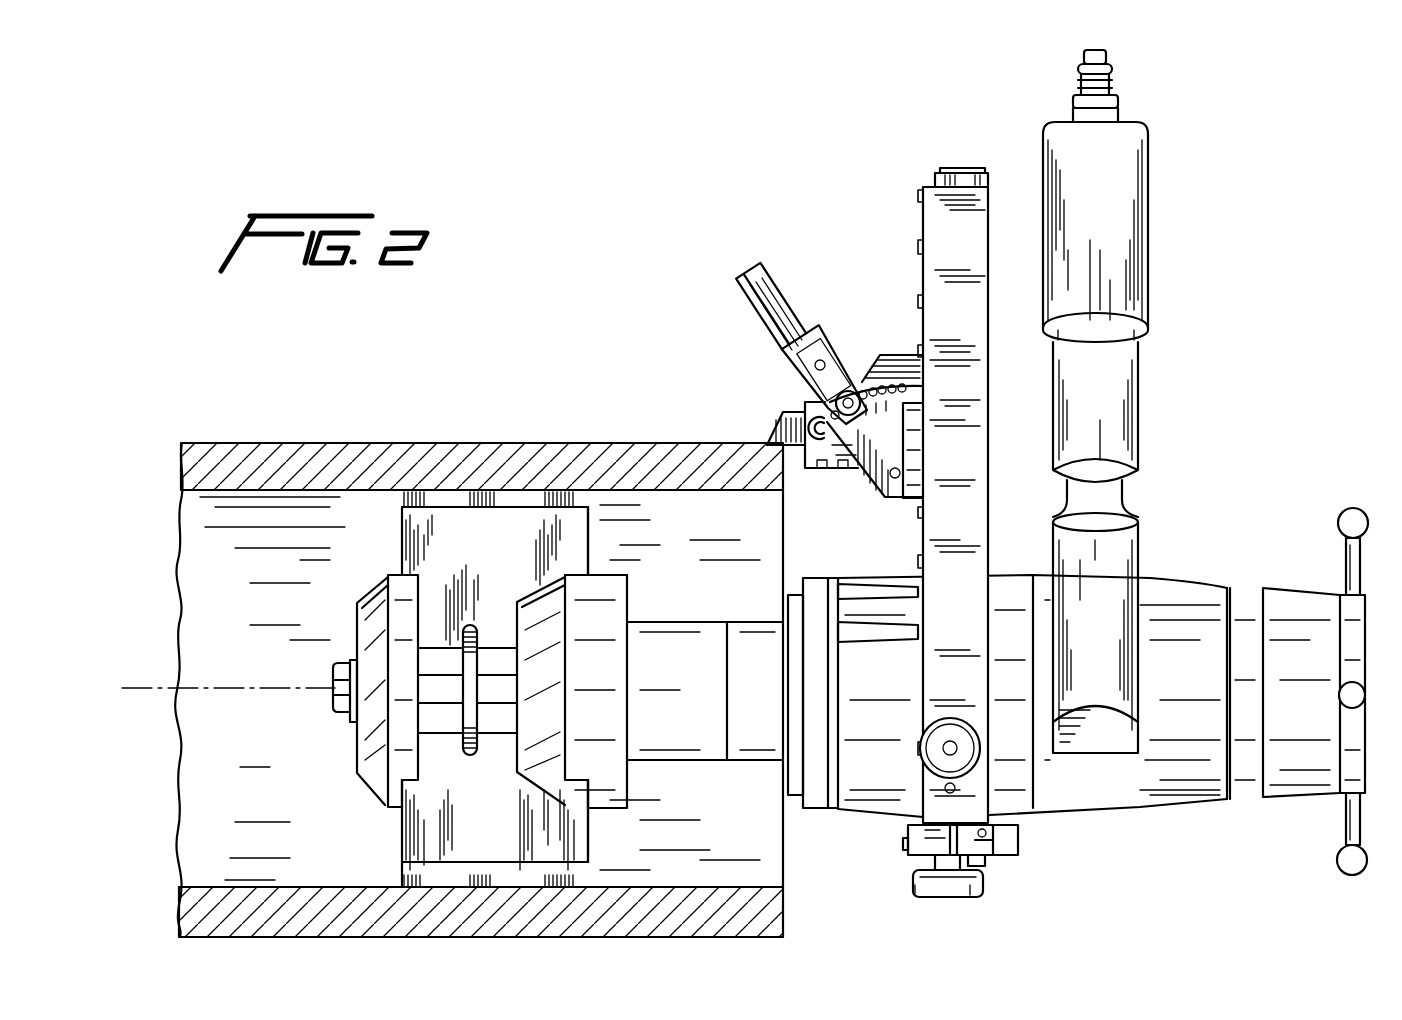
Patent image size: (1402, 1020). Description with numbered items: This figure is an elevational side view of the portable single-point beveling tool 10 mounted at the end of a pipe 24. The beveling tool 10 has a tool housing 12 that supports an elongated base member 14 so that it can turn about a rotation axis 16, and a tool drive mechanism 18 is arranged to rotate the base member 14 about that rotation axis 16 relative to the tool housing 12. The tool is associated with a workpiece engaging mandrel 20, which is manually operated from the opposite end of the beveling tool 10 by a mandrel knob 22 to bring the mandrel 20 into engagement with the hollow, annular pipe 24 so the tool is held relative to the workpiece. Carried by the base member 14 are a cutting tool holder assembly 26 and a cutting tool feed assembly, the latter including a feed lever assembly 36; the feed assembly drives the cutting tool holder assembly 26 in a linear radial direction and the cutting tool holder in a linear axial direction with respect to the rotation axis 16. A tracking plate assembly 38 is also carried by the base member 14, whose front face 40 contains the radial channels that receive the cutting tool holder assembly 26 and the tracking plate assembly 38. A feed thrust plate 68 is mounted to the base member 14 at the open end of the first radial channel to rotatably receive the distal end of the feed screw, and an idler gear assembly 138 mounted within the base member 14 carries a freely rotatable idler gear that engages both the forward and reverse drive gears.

The beveling tool 10 is at (1034, 490).
The tool housing 12 is at (820, 820).
The base member 14 is at (990, 514).
The rotation axis 16 is at (143, 688).
The tool drive mechanism 18 is at (1153, 215).
The workpiece engaging mandrel 20 is at (546, 553).
The mandrel knob 22 is at (1356, 505).
The pipe 24 is at (697, 528).
The cutting tool holder assembly 26 is at (763, 407).
The feed lever assembly 36 is at (1012, 868).
The tracking plate assembly 38 is at (878, 493).
The front face 40 is at (925, 222).
The feed thrust plate 68 is at (935, 173).
The idler gear assembly 138 is at (982, 762).